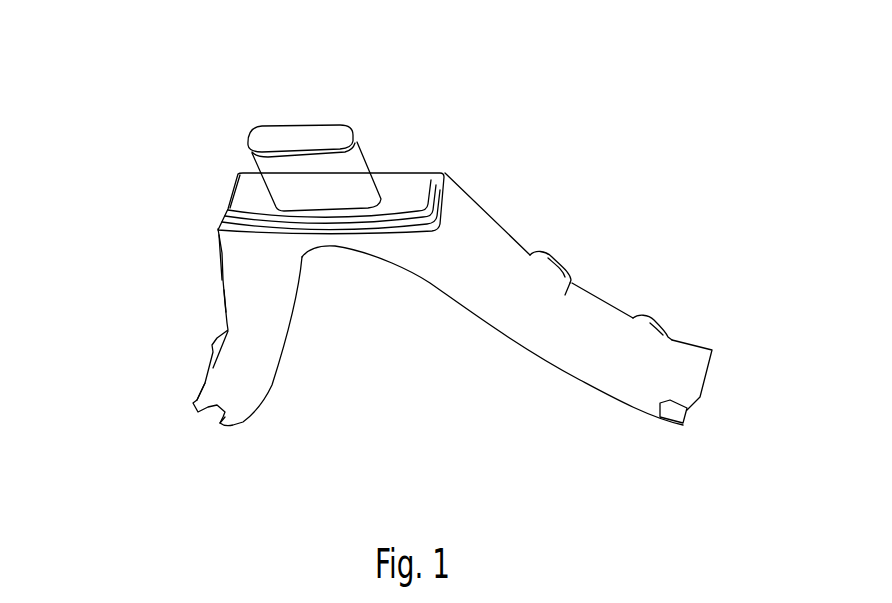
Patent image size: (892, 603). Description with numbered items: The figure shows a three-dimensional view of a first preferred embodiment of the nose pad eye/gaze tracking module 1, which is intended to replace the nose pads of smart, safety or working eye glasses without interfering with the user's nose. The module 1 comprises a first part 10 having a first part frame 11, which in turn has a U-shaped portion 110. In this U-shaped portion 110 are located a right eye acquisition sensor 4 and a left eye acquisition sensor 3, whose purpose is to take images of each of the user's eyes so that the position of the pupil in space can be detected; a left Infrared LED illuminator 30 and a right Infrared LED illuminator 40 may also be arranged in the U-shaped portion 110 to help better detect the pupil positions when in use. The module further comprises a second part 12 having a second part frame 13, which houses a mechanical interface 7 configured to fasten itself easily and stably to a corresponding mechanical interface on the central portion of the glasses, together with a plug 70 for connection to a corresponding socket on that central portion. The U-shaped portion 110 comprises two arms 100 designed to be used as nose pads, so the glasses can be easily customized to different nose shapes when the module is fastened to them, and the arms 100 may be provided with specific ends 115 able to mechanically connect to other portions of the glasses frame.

The nose pad eye/gaze tracking module 1 is at (533, 140).
The left eye acquisition sensor 3 is at (563, 260).
The right eye acquisition sensor 4 is at (222, 278).
The mechanical interface 7 is at (413, 180).
The first part 10 is at (204, 320).
The first part frame 11 is at (224, 300).
The second part 12 is at (452, 170).
The second part frame 13 is at (430, 177).
The left Infrared LED illuminator 30 is at (663, 322).
The right Infrared LED illuminator 40 is at (208, 342).
The plug 70 is at (293, 141).
The arms 100 is at (530, 402).
The U-shaped portion 110 is at (230, 375).
The ends 115 is at (225, 417).